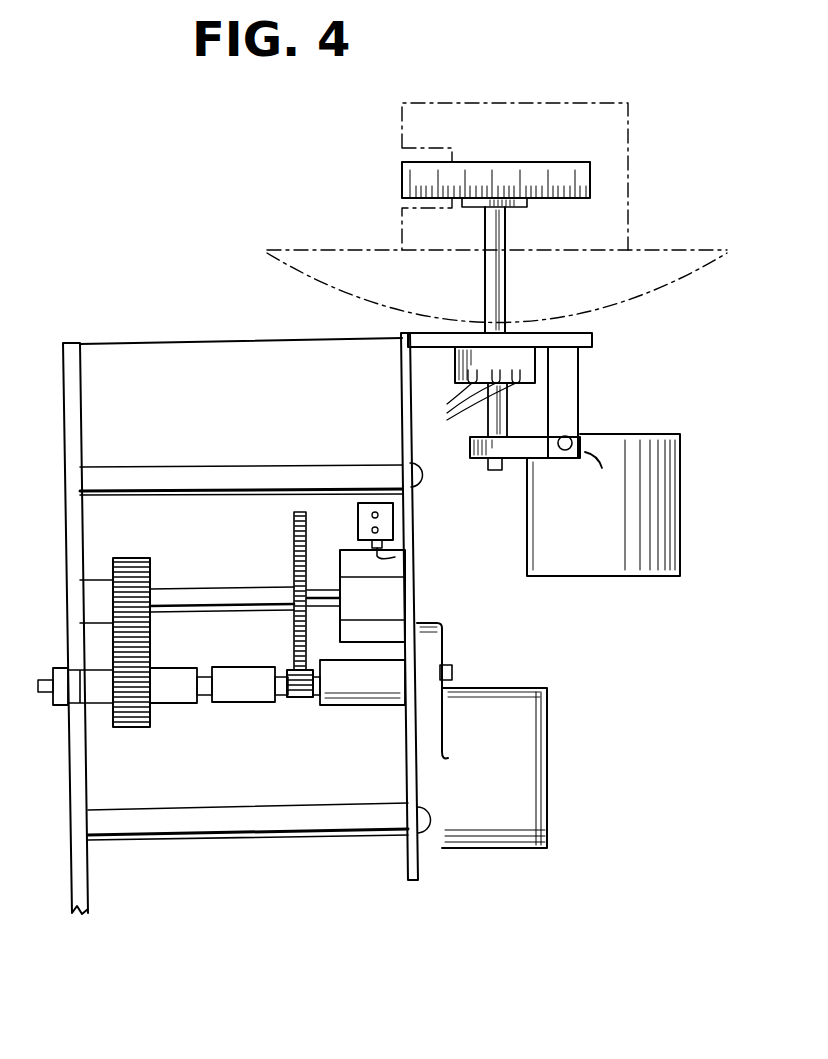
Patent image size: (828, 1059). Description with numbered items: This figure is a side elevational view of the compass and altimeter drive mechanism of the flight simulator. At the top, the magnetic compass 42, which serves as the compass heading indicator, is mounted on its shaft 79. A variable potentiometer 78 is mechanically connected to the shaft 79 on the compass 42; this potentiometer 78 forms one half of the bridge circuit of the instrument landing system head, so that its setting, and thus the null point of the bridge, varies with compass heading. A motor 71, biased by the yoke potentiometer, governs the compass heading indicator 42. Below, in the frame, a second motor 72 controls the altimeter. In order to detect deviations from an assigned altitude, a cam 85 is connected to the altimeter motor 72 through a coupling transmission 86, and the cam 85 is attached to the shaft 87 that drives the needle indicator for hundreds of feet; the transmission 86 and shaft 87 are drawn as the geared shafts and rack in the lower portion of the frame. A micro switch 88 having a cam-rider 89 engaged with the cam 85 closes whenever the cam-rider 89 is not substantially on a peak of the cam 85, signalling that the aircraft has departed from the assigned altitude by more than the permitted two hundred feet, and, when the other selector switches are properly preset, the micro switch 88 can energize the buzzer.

The magnetic compass 42 is at (630, 162).
The shaft 79 is at (497, 291).
The variable potentiometer 78 is at (535, 370).
The motor 71 is at (663, 535).
The motor 72 is at (523, 758).
The cam 85 is at (388, 597).
The coupling transmission 86 is at (238, 700).
The shaft 87 is at (318, 572).
The micro switch 88 is at (391, 523).
The cam-rider 89 is at (395, 557).